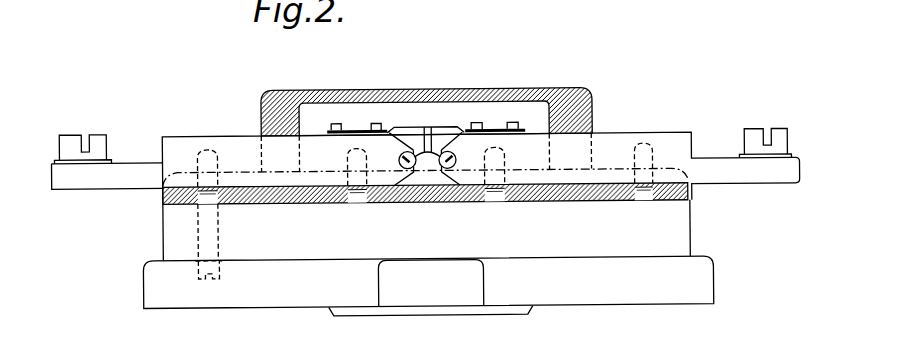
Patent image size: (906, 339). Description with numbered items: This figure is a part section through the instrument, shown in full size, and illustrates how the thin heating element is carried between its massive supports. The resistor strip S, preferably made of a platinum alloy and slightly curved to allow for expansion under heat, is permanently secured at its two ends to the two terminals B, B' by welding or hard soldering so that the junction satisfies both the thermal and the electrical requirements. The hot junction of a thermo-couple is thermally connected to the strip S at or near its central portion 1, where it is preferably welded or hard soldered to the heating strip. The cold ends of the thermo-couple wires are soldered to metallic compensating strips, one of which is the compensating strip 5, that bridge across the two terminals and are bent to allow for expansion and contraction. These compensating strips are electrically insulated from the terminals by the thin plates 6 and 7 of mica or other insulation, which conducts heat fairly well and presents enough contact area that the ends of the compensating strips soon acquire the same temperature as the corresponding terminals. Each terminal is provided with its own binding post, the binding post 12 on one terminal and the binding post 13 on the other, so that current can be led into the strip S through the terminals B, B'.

The central portion 1 is at (425, 151).
The compensating strip 5 is at (438, 129).
The insulating plate 6 is at (532, 133).
The insulating plate 7 is at (312, 107).
The resistor strip S is at (432, 160).
The terminal B is at (471, 208).
The terminal B' is at (129, 148).
The binding post 12 is at (72, 141).
The binding post 13 is at (762, 134).